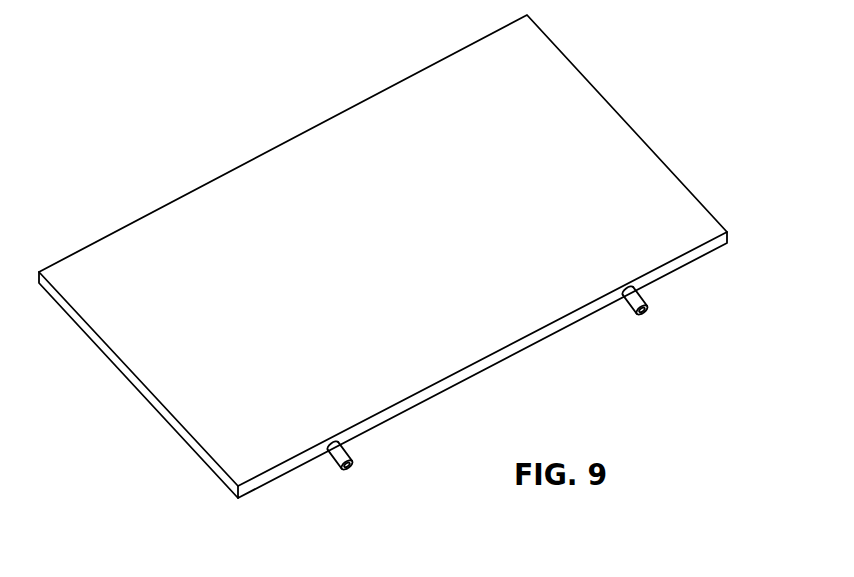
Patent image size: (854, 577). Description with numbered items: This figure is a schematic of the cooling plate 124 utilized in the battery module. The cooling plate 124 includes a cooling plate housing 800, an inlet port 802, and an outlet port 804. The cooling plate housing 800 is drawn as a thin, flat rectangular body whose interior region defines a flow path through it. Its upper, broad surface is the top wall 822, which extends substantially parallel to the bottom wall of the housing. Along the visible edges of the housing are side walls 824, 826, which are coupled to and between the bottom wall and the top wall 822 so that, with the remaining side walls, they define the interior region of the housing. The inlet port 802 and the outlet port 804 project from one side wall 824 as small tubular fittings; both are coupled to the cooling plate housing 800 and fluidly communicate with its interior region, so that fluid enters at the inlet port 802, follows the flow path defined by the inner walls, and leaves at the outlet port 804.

The cooling plate 124 is at (638, 80).
The cooling plate housing 800 is at (654, 178).
The inlet port 802 is at (342, 442).
The outlet port 804 is at (647, 298).
The top wall 822 is at (217, 220).
The side wall 824 is at (288, 466).
The side wall 826 is at (170, 422).